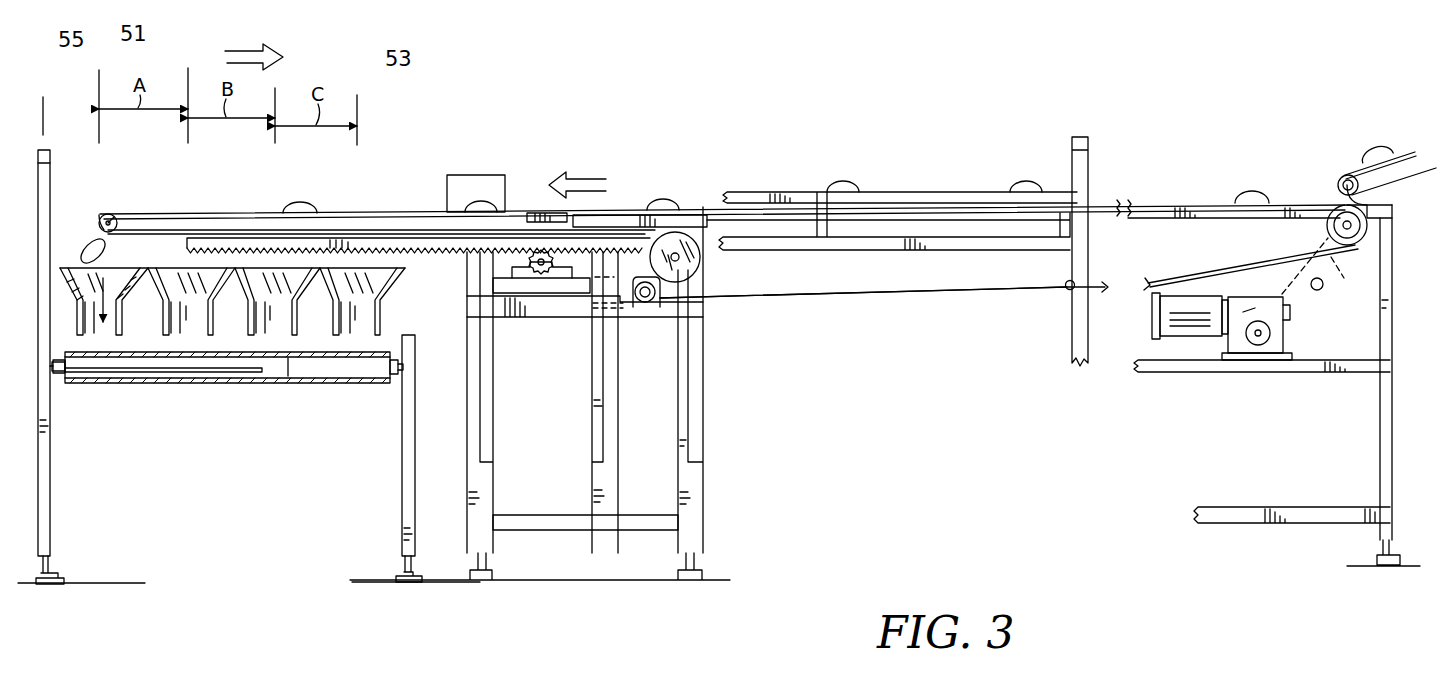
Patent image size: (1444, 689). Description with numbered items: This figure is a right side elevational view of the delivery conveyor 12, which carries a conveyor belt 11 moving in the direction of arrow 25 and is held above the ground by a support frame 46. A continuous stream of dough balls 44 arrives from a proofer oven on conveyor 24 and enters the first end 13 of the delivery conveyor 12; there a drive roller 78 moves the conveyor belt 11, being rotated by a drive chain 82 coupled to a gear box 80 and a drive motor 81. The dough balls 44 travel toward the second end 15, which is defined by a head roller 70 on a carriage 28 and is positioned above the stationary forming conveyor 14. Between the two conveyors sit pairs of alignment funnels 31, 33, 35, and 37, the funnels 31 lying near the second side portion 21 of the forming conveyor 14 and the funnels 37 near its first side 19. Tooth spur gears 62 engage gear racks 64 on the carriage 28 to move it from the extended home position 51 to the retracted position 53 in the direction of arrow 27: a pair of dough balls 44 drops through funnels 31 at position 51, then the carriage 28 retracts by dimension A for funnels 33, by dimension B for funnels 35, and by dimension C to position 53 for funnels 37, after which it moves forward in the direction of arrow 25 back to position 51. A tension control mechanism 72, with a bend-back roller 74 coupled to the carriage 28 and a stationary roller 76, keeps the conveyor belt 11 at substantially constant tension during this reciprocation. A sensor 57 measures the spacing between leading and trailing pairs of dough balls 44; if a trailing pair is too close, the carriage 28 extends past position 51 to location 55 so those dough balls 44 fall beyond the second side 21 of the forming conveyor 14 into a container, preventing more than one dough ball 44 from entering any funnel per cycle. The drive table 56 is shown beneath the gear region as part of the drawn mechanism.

The conveyor belt 11 is at (415, 210).
The delivery conveyor 12 is at (899, 93).
The first end 13 is at (1328, 178).
The forming conveyor 14 is at (288, 360).
The second end 15 is at (108, 213).
The first side 19 is at (387, 389).
The second side portion 21 is at (64, 392).
The conveyor 24 is at (1413, 152).
The arrow 25 is at (583, 183).
The arrow 27 is at (251, 50).
The carriage 28 is at (366, 215).
The alignment funnels 31 is at (120, 286).
The alignment funnels 33 is at (206, 284).
The alignment funnels 35 is at (289, 284).
The alignment funnels 37 is at (386, 296).
The dough balls 44 is at (727, 200).
The support frame 46 is at (45, 485).
The extended home position 51 is at (100, 63).
The retracted position 53 is at (362, 88).
The location 55 is at (49, 88).
The drive table 56 is at (503, 314).
The sensor 57 is at (497, 178).
The tooth spur gears 62 is at (548, 272).
The gear racks 64 is at (445, 253).
The head roller 70 is at (121, 216).
The tension control mechanism 72 is at (707, 289).
The bend-back roller 74 is at (691, 265).
The stationary roller 76 is at (645, 306).
The drive roller 78 is at (1333, 234).
The gear box 80 is at (1247, 346).
The drive motor 81 is at (1149, 322).
The drive chain 82 is at (1324, 271).